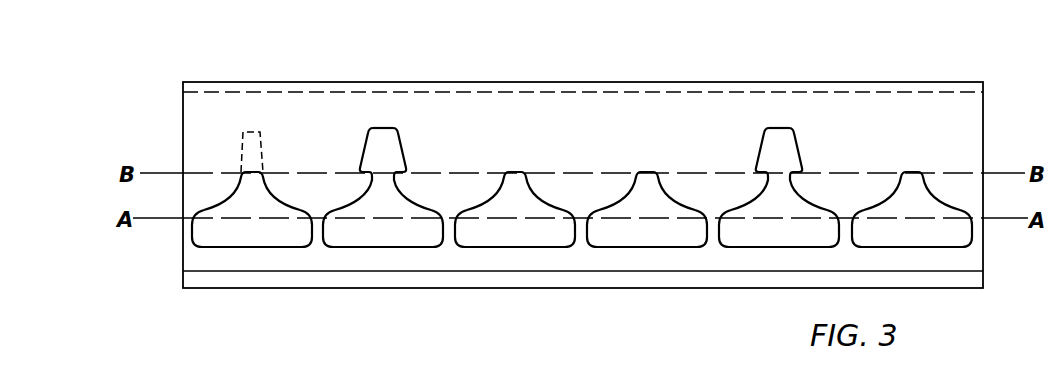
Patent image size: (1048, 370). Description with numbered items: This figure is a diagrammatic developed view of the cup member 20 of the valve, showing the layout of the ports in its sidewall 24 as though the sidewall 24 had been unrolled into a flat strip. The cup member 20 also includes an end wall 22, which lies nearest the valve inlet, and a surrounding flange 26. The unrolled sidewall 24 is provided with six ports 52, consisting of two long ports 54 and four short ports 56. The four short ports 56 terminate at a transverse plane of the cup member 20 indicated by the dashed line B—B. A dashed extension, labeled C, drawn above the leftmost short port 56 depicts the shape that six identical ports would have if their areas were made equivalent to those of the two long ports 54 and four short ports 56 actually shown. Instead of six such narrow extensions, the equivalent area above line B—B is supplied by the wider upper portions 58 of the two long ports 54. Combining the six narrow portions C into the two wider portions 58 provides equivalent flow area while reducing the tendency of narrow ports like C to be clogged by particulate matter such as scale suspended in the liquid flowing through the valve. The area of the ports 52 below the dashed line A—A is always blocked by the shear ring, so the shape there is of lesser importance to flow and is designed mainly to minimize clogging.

The cup member 20 is at (319, 71).
The end wall 22 is at (414, 91).
The sidewall 24 is at (527, 108).
The surrounding flange 26 is at (460, 280).
The ports 52 is at (399, 157).
The long ports 54 is at (393, 209).
The short ports 56 is at (264, 208).
The wider upper portions 58 is at (382, 138).
The dashed line C c is at (259, 146).